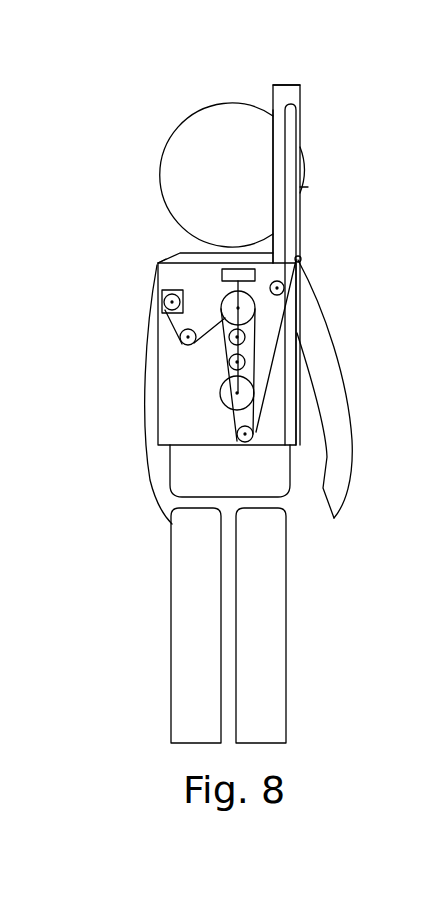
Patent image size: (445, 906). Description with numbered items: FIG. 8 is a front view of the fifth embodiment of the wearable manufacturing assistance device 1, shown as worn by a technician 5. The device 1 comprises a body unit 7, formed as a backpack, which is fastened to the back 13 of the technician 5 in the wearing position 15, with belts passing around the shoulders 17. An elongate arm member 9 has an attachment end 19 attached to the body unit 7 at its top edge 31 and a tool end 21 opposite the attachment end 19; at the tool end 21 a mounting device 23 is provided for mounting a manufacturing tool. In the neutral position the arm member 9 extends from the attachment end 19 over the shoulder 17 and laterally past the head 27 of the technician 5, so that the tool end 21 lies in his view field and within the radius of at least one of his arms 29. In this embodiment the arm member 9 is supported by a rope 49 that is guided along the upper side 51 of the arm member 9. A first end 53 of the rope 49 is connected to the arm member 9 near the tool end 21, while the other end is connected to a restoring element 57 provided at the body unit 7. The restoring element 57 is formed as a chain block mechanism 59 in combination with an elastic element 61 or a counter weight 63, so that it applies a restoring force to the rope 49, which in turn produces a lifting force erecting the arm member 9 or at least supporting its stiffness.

The wearable manufacturing assistance device 1 is at (352, 162).
The technician 5 is at (185, 475).
The body unit 7 is at (297, 354).
The arm member 9 is at (305, 187).
The back 13 is at (197, 253).
The wearing position 15 is at (137, 317).
The shoulders 17 is at (165, 258).
The attachment end 19 is at (300, 275).
The tool end 21 is at (300, 87).
The mounting device 23 is at (284, 93).
The head 27 is at (240, 165).
The arms 29 is at (334, 452).
The top edge 31 is at (202, 256).
The rope 49 is at (288, 225).
The upper side 51 is at (279, 175).
The first end 53 is at (288, 104).
The restoring element 57 is at (202, 377).
The chain block mechanism 59 is at (297, 334).
The elastic element 61 is at (222, 289).
The counter weight 63 is at (180, 338).